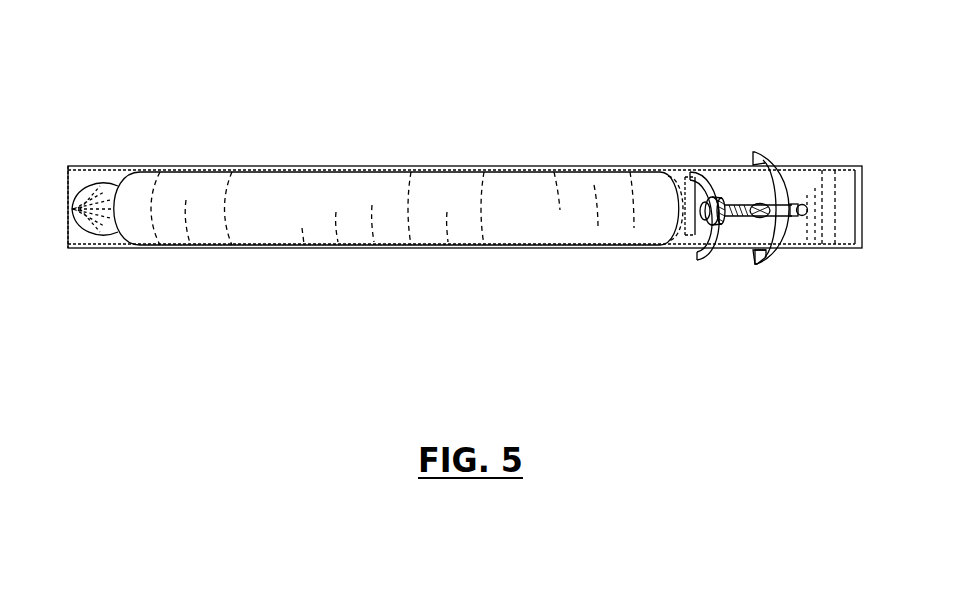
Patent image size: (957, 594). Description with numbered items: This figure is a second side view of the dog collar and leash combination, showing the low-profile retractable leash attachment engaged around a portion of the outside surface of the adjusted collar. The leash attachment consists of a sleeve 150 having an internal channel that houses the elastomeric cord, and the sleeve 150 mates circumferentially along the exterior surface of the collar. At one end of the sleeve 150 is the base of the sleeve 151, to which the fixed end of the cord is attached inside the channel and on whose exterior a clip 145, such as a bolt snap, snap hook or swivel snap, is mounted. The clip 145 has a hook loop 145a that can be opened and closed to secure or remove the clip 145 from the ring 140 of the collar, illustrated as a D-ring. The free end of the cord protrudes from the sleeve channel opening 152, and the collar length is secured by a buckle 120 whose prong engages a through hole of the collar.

The buckle 120 is at (856, 220).
The ring 140 is at (769, 152).
The clip 145 is at (690, 260).
The hook loop 145a is at (758, 262).
The sleeve 150 is at (255, 190).
The base of the sleeve 151 is at (686, 172).
The sleeve channel opening 152 is at (716, 194).